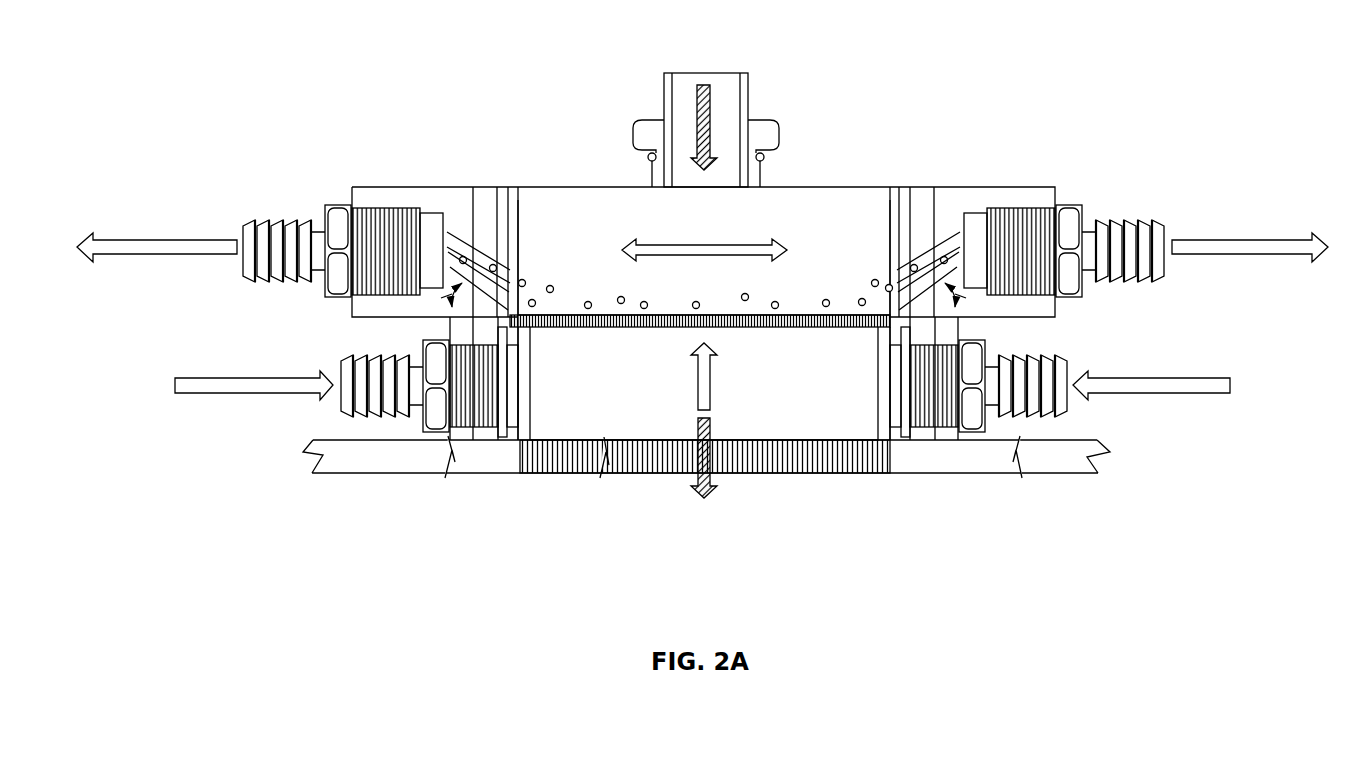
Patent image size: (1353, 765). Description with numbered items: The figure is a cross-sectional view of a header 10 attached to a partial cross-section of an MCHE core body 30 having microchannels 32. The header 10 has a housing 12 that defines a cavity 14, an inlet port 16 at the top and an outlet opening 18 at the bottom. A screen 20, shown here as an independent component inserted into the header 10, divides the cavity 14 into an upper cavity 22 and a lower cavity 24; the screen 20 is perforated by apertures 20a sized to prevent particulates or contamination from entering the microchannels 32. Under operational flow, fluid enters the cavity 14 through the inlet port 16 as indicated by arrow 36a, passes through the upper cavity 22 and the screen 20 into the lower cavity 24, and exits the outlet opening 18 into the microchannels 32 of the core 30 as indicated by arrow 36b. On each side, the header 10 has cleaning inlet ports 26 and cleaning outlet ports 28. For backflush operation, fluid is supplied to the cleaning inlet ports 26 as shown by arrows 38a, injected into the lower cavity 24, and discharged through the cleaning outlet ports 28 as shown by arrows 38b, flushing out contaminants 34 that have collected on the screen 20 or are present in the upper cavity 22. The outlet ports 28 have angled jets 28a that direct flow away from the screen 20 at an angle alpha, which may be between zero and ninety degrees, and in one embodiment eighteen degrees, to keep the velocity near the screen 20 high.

The header 10 is at (820, 185).
The housing 12 is at (893, 186).
The cavity 14 is at (558, 210).
The inlet port 16 is at (750, 83).
The outlet opening 18 is at (892, 470).
The screen 20 is at (810, 330).
The apertures 20a is at (847, 327).
The upper cavity 22 is at (587, 208).
The lower cavity 24 is at (583, 408).
The cleaning inlet ports 26 is at (336, 370).
The cleaning outlet ports 28 is at (240, 230).
The angled jets 28a is at (458, 237).
The MCHE core body 30 is at (1102, 468).
The microchannels 32 is at (600, 473).
The contaminants 34 is at (562, 284).
The arrow 36a is at (697, 110).
The arrow 36b is at (714, 484).
The arrows 38a is at (202, 376).
The arrows 38b is at (108, 238).